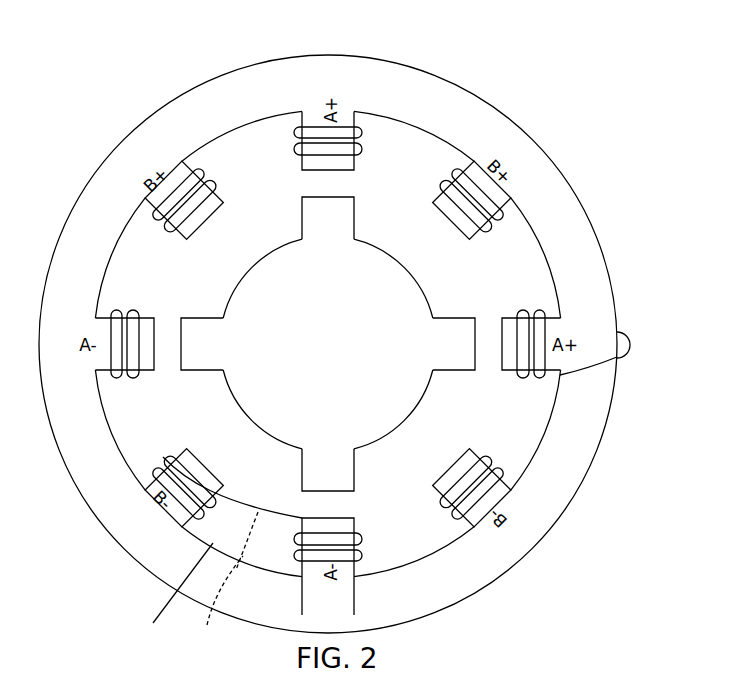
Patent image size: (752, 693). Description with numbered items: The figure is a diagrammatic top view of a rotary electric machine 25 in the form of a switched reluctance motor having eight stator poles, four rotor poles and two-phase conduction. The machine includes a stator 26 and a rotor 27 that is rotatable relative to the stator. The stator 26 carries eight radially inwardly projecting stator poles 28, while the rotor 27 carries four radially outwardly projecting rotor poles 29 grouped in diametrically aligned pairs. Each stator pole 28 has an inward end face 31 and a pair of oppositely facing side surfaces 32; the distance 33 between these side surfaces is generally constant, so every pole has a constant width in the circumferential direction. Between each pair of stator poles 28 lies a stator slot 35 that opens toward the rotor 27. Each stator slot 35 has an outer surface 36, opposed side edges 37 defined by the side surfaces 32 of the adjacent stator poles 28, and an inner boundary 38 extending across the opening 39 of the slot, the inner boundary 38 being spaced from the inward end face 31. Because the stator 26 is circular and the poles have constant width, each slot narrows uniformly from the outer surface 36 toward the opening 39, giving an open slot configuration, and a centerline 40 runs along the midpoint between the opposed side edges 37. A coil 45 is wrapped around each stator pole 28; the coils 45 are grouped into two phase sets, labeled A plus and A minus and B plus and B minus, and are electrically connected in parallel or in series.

The rotary electric machine 25 is at (468, 78).
The stator 26 is at (520, 157).
The rotor 27 is at (405, 305).
The stator pole 28 is at (357, 156).
The rotor pole 29 is at (350, 222).
The inward end face 31 is at (148, 346).
The side surfaces 32 is at (165, 375).
The distance 33 is at (357, 598).
The stator slot 35 is at (262, 160).
The outer surface 36 is at (171, 592).
The opposed side edges 37 is at (232, 513).
The inner boundary 38 is at (292, 510).
The opening 39 is at (240, 492).
The centerline 40 is at (219, 600).
The coil 45 is at (450, 166).